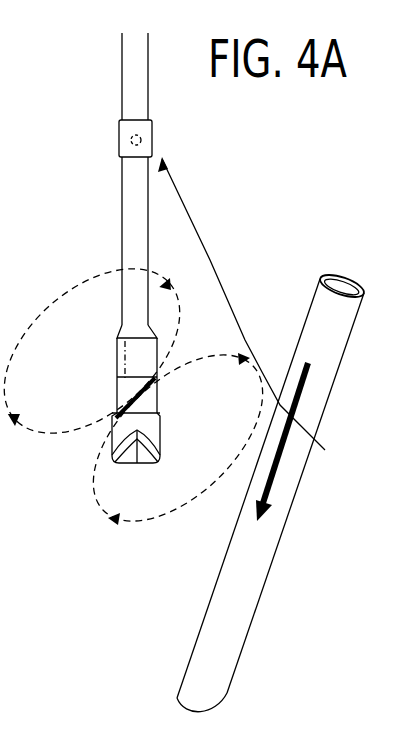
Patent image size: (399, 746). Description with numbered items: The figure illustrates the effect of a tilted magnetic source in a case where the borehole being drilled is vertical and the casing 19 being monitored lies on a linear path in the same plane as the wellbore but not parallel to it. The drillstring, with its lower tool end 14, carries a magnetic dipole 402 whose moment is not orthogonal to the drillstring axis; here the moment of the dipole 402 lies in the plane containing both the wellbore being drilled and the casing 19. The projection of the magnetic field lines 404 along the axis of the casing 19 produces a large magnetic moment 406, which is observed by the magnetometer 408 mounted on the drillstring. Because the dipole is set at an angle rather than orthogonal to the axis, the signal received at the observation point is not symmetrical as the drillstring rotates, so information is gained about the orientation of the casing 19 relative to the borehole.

The magnetometer 408 is at (132, 139).
The magnetic dipole 402 is at (128, 398).
The distal tip 14 is at (126, 464).
The magnetic field lines 404 is at (131, 527).
The magnetic moment 406 is at (261, 319).
The casing 19 is at (267, 577).